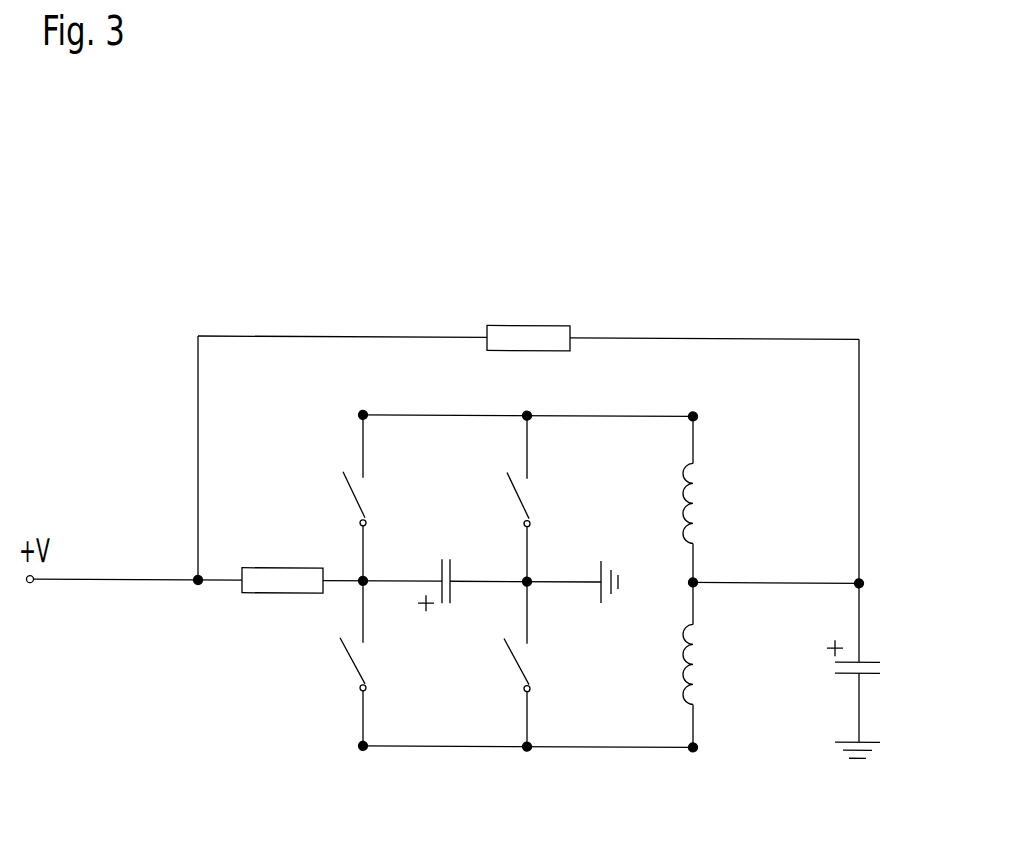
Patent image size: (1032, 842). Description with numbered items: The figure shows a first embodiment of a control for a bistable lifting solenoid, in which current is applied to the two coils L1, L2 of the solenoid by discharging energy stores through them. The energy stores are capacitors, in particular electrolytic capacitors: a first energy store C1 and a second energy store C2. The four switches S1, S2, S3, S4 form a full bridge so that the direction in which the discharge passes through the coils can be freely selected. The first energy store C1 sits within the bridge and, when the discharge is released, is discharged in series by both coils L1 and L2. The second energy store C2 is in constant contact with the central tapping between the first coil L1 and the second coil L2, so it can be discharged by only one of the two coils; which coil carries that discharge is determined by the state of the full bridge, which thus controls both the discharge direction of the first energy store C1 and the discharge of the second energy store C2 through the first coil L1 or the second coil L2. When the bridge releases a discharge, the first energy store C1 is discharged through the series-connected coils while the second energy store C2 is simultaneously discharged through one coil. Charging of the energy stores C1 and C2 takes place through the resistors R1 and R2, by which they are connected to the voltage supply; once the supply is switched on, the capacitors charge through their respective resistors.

The resistor R1 is at (282, 562).
The resistor R2 is at (528, 316).
The first energy store C1 is at (437, 564).
The second energy store C2 is at (877, 671).
The first coil L1 is at (665, 499).
The second coil L2 is at (665, 664).
The switch S1 is at (334, 498).
The switch S2 is at (334, 663).
The switch S3 is at (498, 498).
The switch S4 is at (497, 663).